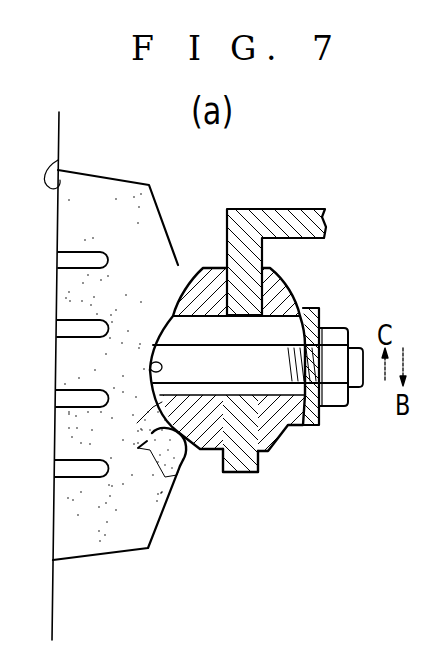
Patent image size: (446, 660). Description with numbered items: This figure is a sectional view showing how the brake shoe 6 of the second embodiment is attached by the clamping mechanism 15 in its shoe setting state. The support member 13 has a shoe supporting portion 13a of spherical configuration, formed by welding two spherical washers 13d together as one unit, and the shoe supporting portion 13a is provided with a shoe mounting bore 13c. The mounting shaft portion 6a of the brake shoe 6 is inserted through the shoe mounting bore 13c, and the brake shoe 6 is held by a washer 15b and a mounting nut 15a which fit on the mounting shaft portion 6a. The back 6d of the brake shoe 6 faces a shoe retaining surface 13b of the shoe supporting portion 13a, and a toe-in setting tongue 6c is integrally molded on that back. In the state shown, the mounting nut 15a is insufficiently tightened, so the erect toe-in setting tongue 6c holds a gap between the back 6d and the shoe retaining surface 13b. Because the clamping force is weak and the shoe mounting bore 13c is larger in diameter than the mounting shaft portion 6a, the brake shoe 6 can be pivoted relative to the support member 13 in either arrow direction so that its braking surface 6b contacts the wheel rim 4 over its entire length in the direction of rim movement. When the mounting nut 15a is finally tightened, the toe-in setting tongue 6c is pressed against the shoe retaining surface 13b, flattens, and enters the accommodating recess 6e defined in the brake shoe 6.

The wheel rim 4 is at (53, 592).
The brake shoe 6 is at (129, 185).
The mounting shaft portion 6a is at (193, 345).
The braking surface 6b is at (57, 162).
The toe-in setting tongue 6c is at (187, 447).
The back 6d is at (150, 368).
The accommodating recess 6e is at (160, 456).
The support member 13 is at (283, 208).
The shoe supporting portion 13a is at (245, 474).
The shoe retaining surface 13b is at (195, 272).
The shoe mounting bore 13c is at (257, 330).
The spherical washers 13d is at (265, 442).
The clamping mechanism 15 is at (350, 327).
The mounting nut 15a is at (331, 409).
The washer 15b is at (307, 440).